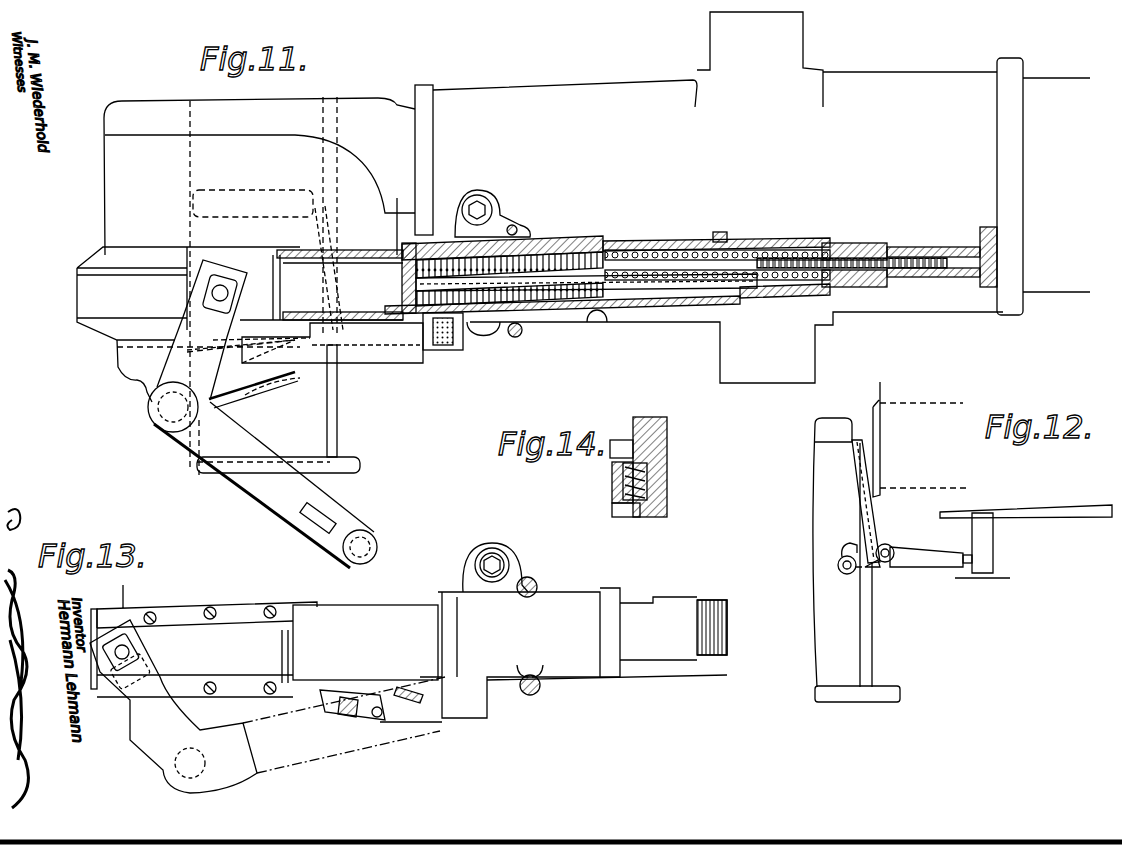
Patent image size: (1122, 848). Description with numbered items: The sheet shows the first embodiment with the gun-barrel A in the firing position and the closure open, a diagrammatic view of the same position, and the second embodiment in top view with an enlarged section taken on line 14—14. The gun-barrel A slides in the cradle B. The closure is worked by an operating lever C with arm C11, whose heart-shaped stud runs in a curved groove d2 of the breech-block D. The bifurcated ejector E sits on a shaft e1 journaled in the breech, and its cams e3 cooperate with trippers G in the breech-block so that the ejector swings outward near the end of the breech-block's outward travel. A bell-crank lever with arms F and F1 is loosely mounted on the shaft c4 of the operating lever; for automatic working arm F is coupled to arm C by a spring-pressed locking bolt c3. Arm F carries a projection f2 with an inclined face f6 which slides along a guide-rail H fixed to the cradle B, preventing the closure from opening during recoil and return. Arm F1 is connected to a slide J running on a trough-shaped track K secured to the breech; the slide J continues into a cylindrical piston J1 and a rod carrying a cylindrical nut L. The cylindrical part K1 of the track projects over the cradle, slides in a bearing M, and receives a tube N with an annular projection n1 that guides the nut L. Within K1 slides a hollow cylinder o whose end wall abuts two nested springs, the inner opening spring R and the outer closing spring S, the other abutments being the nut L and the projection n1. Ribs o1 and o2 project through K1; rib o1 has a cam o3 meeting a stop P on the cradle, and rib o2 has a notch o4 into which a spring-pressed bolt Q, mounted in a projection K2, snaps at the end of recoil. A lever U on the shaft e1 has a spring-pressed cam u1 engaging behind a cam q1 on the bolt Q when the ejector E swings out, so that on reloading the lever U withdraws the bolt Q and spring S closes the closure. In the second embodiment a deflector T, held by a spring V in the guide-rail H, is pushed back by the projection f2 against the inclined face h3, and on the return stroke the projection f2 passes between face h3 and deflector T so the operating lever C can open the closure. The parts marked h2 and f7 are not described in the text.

In FIG. 11, the track K is at (138, 268).
In FIG. 11, the slide J is at (263, 285).
In FIG. 11, the bifurcated ejector E is at (327, 222).
In FIG. 12, the bifurcated ejector E is at (873, 524).
In FIG. 11, the cylindrical piston J1 is at (397, 198).
In FIG. 11, the gun-barrel A is at (392, 103).
In FIG. 11, the cradle B is at (640, 95).
In FIG. 11, the cylindrical part of track K1 is at (425, 243).
In FIG. 11, the rib o2 is at (513, 275).
In FIG. 12, the rib o2 is at (1048, 510).
In FIG. 11, the hollow cylinder o is at (447, 247).
In FIG. 11, the stop P is at (482, 232).
In FIG. 11, the rib o1 is at (542, 262).
In FIG. 11, the bearing M is at (585, 250).
In FIG. 11, the cam o3 is at (620, 243).
In FIG. 11, the annular projection n1 is at (674, 243).
In FIG. 11, the tube N is at (745, 243).
In FIG. 11, the cylindrical nut L is at (855, 250).
In FIG. 11, the projection K2 is at (460, 325).
In FIG. 11, the opening spring R is at (633, 308).
In FIG. 11, the closing spring S is at (655, 308).
In FIG. 11, the lever U is at (440, 353).
In FIG. 12, the lever U is at (933, 568).
In FIG. 11, the spring-pressed bolt Q is at (458, 362).
In FIG. 12, the spring-pressed bolt Q is at (992, 543).
In FIG. 11, the plate h2 is at (413, 360).
In FIG. 11, the guide-rail H is at (330, 357).
In FIG. 14, the guide-rail H is at (657, 441).
In FIG. 13, the guide-rail H is at (262, 717).
In FIG. 11, the ejector shaft e1 is at (350, 345).
In FIG. 12, the ejector shaft e1 is at (890, 566).
In FIG. 11, the breech-block D is at (317, 440).
In FIG. 12, the breech-block D is at (853, 667).
In FIG. 11, the arm of bell-crank lever F1 is at (118, 362).
In FIG. 11, the shaft of operating lever c4 is at (167, 420).
In FIG. 11, the operating lever C is at (270, 493).
In FIG. 13, the operating lever C is at (243, 760).
In FIG. 11, the arm of operating lever C11 is at (283, 387).
In FIG. 11, the curved groove d2 is at (252, 403).
In FIG. 11, the locking bolt c3 is at (310, 517).
In FIG. 11, the roller f7 is at (358, 553).
In FIG. 11, the inclined face f6 is at (363, 537).
In FIG. 11, the projection f2 is at (370, 543).
In FIG. 13, the projection f2 is at (420, 710).
In FIG. 12, the trippers G is at (843, 556).
In FIG. 12, the cams e3 is at (877, 568).
In FIG. 12, the spring-pressed cam u1 is at (967, 554).
In FIG. 12, the cam q1 is at (965, 568).
In FIG. 12, the notch o4 is at (988, 512).
In FIG. 13, the section line 14 is at (363, 770).
In FIG. 13, the arm of bell-crank lever F is at (307, 727).
In FIG. 13, the inclined face h3 is at (330, 730).
In FIG. 14, the deflector T is at (620, 479).
In FIG. 13, the deflector T is at (347, 727).
In FIG. 14, the spring V is at (647, 483).
In FIG. 13, the spring V is at (377, 720).